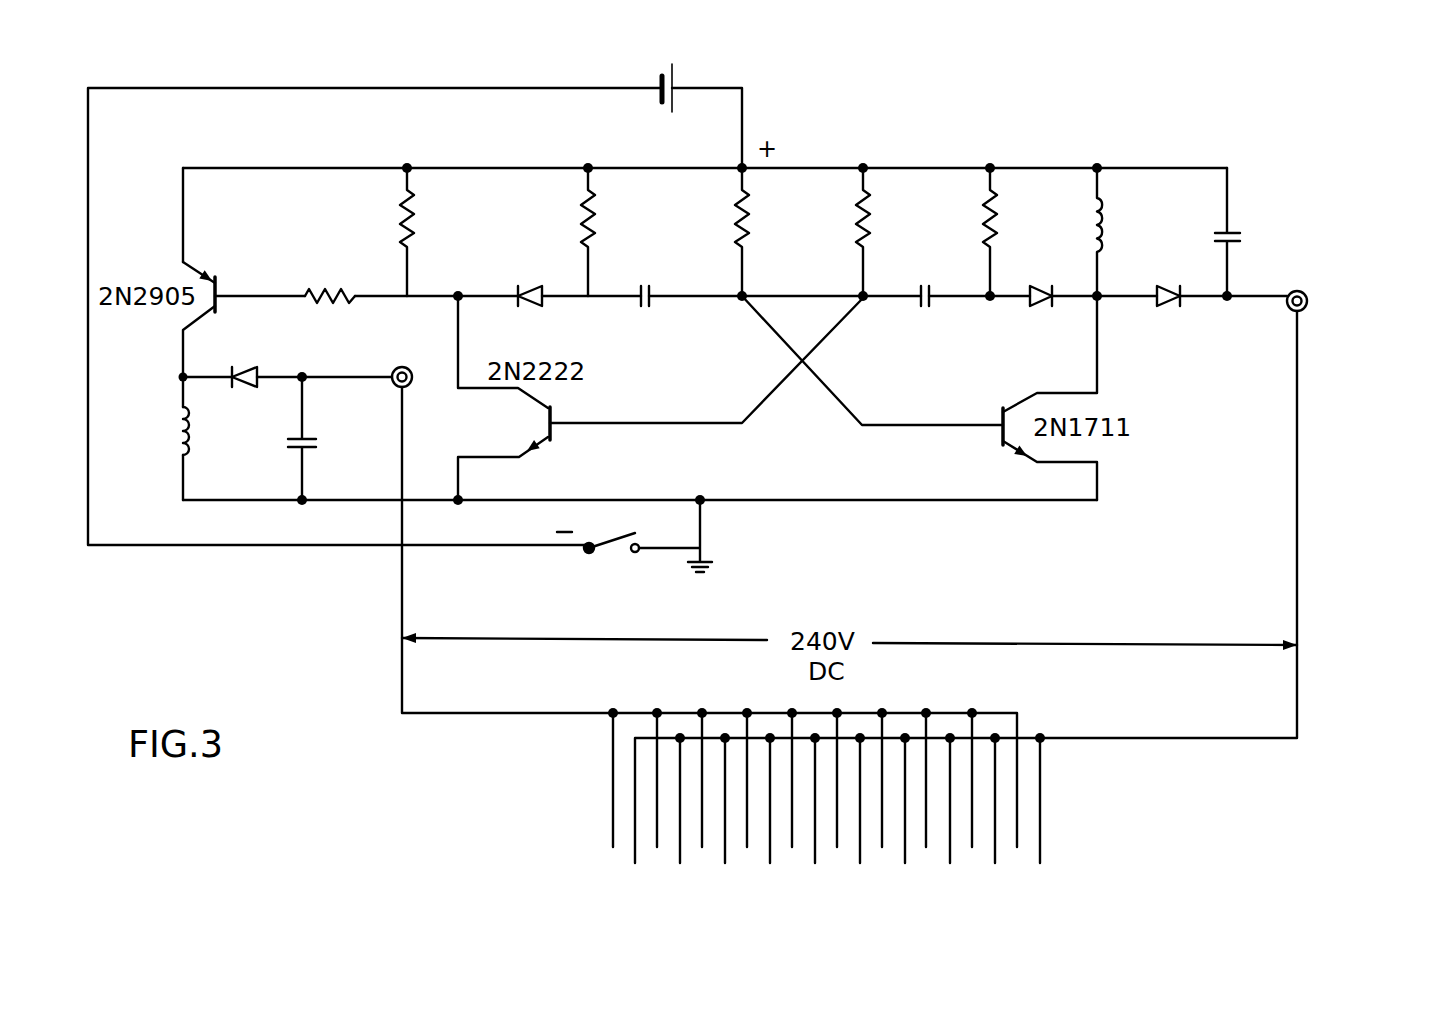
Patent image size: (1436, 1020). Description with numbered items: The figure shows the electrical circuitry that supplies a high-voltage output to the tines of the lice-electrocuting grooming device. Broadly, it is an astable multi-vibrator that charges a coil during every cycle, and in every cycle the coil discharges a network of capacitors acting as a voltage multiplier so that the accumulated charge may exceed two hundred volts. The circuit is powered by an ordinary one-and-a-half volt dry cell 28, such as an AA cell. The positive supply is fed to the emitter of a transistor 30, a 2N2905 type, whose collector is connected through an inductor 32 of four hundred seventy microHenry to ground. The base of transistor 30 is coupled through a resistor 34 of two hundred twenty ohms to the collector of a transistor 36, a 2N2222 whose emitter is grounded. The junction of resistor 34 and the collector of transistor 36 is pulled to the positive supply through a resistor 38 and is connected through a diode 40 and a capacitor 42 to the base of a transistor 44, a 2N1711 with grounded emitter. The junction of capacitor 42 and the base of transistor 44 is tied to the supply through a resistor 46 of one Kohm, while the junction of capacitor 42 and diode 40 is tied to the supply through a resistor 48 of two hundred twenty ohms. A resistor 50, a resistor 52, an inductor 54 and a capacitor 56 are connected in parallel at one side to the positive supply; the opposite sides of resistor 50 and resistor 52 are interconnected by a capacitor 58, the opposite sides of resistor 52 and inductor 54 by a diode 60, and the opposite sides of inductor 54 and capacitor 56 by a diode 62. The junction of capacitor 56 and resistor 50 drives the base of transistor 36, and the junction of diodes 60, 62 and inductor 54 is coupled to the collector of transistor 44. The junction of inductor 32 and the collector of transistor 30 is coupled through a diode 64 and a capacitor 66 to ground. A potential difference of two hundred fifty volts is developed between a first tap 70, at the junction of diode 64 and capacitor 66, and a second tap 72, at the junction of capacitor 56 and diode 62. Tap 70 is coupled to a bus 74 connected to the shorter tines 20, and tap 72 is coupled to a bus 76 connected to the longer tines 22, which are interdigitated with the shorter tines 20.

The shorter tines 20 is at (880, 847).
The longer tines 22 is at (680, 857).
The dry cell 28 is at (675, 63).
The transistor 30 is at (183, 275).
The inductor 32 is at (178, 422).
The resistor 34 is at (315, 291).
The transistor 36 is at (557, 428).
The resistor 38 is at (410, 220).
The diode 40 is at (530, 285).
The capacitor 42 is at (652, 288).
The transistor 44 is at (1002, 428).
The resistor 46 is at (750, 220).
The resistor 48 is at (593, 220).
The resistor 50 is at (868, 222).
The resistor 52 is at (995, 222).
The inductor 54 is at (1108, 222).
The capacitor 56 is at (1232, 233).
The capacitor 58 is at (917, 301).
The diode 60 is at (1030, 300).
The diode 62 is at (1180, 305).
The diode 64 is at (257, 368).
The capacitor 66 is at (290, 442).
The first tap 70 is at (394, 367).
The second tap 72 is at (1310, 296).
The bus 74 is at (533, 713).
The bus 76 is at (1128, 740).